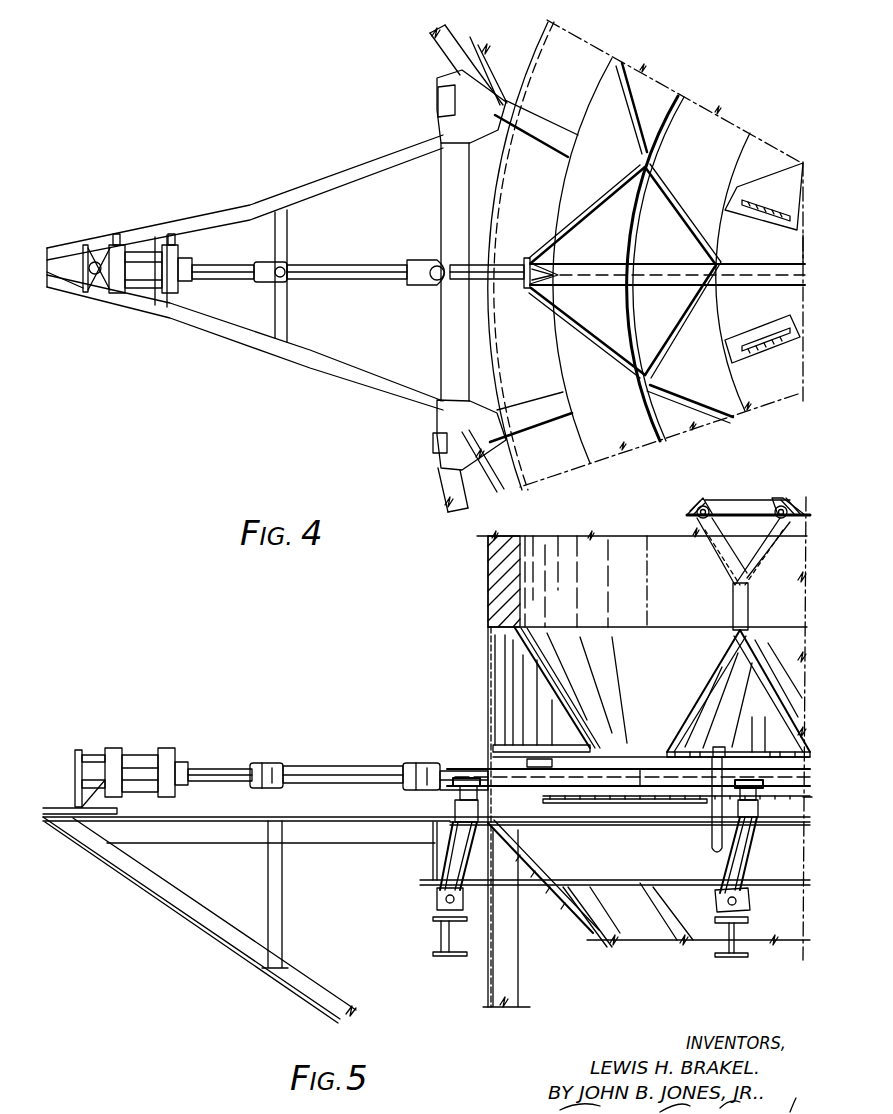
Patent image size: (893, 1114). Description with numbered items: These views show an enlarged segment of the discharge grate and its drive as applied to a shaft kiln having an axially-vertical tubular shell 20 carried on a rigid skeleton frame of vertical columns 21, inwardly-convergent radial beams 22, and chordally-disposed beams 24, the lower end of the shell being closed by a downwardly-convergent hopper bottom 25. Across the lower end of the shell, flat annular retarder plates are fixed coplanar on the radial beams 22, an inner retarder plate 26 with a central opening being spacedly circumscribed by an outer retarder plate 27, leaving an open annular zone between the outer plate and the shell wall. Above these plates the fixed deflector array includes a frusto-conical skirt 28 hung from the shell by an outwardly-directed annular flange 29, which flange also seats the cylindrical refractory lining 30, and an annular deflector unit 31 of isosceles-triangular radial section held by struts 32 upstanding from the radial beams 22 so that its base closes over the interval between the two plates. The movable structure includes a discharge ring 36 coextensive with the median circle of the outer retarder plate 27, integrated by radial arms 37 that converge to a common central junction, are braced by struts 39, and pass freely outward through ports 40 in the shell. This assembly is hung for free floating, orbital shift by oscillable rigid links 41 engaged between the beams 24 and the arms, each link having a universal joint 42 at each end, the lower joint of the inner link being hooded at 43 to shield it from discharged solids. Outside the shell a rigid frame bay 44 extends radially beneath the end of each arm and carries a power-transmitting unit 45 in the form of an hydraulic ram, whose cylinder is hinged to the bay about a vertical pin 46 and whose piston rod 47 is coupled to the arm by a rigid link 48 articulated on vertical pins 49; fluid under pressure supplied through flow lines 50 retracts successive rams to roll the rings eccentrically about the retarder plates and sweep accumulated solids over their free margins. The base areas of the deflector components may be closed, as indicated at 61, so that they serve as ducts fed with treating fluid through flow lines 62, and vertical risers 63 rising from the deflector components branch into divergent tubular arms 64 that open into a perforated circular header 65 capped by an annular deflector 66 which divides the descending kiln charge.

In FIG. 4, the tubular shell 20 is at (496, 367).
In FIG. 5, the tubular shell 20 is at (486, 604).
In FIG. 5, the vertical columns 21 is at (527, 992).
In FIG. 4, the radial beams 22 is at (570, 104).
In FIG. 5, the radial beams 22 is at (615, 883).
In FIG. 4, the chordally-disposed beams 24 is at (506, 492).
In FIG. 5, the chordally-disposed beams 24 is at (451, 947).
In FIG. 5, the hopper bottom 25 is at (579, 928).
In FIG. 4, the inner retarder plate 26 is at (800, 247).
In FIG. 5, the inner retarder plate 26 is at (782, 799).
In FIG. 4, the outer retarder plate 27 is at (697, 272).
In FIG. 5, the outer retarder plate 27 is at (604, 802).
In FIG. 5, the frusto-conical skirt 28 is at (549, 674).
In FIG. 5, the annular flange 29 is at (507, 633).
In FIG. 5, the refractory lining 30 is at (488, 556).
In FIG. 5, the annular deflector unit 31 is at (773, 688).
In FIG. 4, the struts 32 is at (786, 188).
In FIG. 5, the struts 32 is at (755, 754).
In FIG. 4, the second discharge ring 36 is at (640, 166).
In FIG. 5, the second discharge ring 36 is at (656, 766).
In FIG. 4, the arms 37 is at (674, 268).
In FIG. 5, the arms 37 is at (600, 768).
In FIG. 4, the struts 39 is at (600, 210).
In FIG. 5, the ports 40 is at (488, 767).
In FIG. 5, the links 41 is at (448, 863).
In FIG. 5, the universal joint 42 is at (454, 802).
In FIG. 5, the hood 43 is at (714, 898).
In FIG. 4, the frame bay 44 is at (282, 185).
In FIG. 5, the frame bay 44 is at (349, 838).
In FIG. 4, the power-transmitting unit 45 is at (150, 269).
In FIG. 5, the power-transmitting unit 45 is at (144, 756).
In FIG. 4, the pin 46 is at (95, 262).
In FIG. 5, the pin 46 is at (80, 780).
In FIG. 4, the piston rod 47 is at (236, 246).
In FIG. 5, the piston rod 47 is at (220, 768).
In FIG. 4, the rigid link 48 is at (362, 246).
In FIG. 5, the rigid link 48 is at (356, 766).
In FIG. 4, the pins 49 is at (284, 262).
In FIG. 5, the pins 49 is at (280, 762).
In FIG. 4, the flow lines 50 is at (116, 236).
In FIG. 5, the closed base 61 is at (789, 750).
In FIG. 5, the flow lines 62 is at (711, 838).
In FIG. 5, the vertical risers 63 is at (746, 614).
In FIG. 5, the tubular arms 64 is at (748, 531).
In FIG. 5, the circular header 65 is at (698, 513).
In FIG. 5, the annular deflectors 66 is at (790, 495).